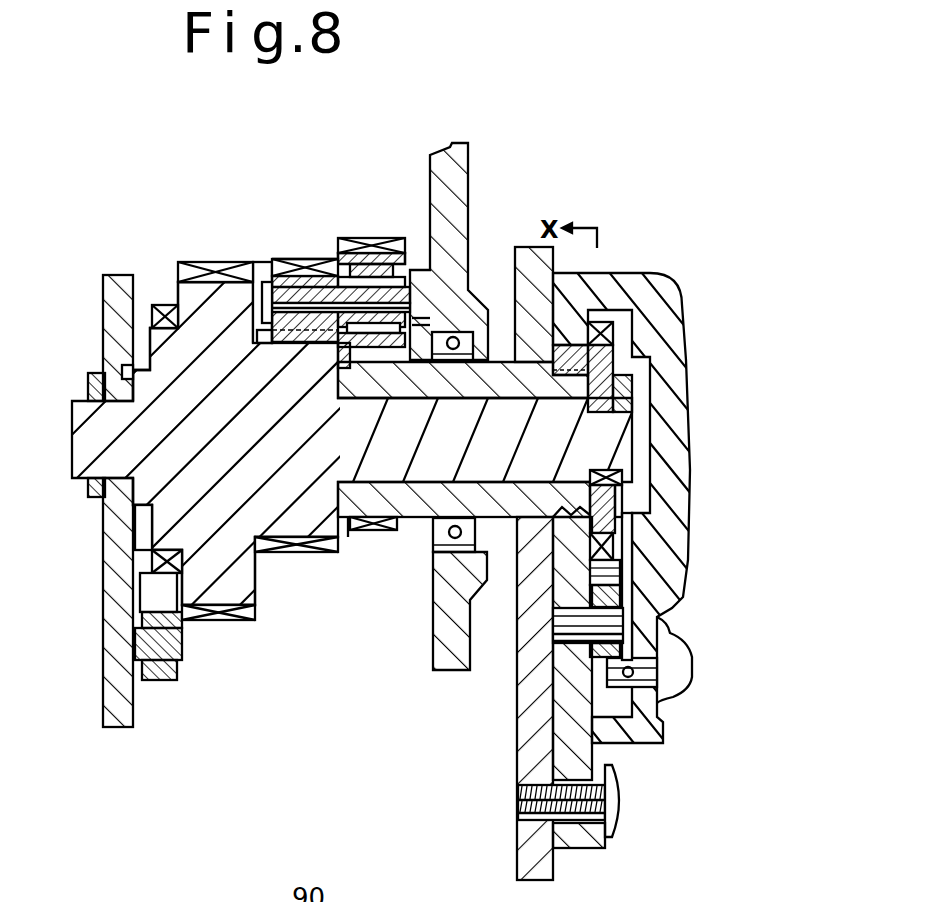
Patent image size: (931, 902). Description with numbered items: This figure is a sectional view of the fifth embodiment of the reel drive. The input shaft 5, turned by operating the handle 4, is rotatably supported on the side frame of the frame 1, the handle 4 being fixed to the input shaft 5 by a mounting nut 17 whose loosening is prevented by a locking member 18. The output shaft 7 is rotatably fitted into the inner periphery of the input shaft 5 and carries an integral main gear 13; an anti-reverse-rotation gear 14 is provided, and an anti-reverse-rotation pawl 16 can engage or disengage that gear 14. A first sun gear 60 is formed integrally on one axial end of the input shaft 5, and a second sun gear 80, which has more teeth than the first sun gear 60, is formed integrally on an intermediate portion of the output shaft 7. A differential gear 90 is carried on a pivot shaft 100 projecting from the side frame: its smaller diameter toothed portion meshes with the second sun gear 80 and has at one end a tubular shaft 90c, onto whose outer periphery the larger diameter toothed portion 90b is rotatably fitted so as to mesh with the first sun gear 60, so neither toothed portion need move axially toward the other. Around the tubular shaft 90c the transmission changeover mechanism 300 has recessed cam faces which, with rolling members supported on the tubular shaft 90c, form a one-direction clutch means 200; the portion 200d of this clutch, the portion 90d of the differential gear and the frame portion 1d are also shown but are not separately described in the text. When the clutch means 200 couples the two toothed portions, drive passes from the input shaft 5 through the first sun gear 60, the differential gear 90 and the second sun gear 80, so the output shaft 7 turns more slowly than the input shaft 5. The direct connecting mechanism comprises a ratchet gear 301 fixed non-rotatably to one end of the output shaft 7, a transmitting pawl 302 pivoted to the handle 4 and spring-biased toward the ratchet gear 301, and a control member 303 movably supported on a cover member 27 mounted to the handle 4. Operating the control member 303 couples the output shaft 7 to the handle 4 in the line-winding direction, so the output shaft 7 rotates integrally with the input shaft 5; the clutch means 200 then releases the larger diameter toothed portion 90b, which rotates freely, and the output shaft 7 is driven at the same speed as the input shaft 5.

The fixed housing plate 1 is at (456, 142).
The housing flange 1d is at (103, 300).
The handle 4 is at (522, 733).
The input shaft 5 is at (505, 368).
The output shaft 7 is at (418, 472).
The main gear 13 is at (193, 282).
The anti-reverse-rotation gear 14 is at (160, 303).
The anti-reverse-rotation pawl 16 is at (140, 590).
The mounting nut 17 is at (588, 348).
The locking member 18 is at (580, 733).
The cover member 27 is at (678, 430).
The first sun gear 60 is at (363, 532).
The second sun gear 80 is at (300, 553).
The differential gear 90 is at (287, 258).
The larger diameter toothed portion 90b is at (333, 257).
The tubular shaft 90c is at (370, 243).
The bearing 90d is at (278, 262).
The pivot shaft 100 is at (390, 298).
The clutch means 200 is at (360, 238).
The hub flange 200d is at (378, 237).
The transmission changeover mechanism 300 is at (630, 535).
The ratchet gear 301 is at (610, 510).
The transmitting pawl 302 is at (613, 568).
The control member 303 is at (673, 662).